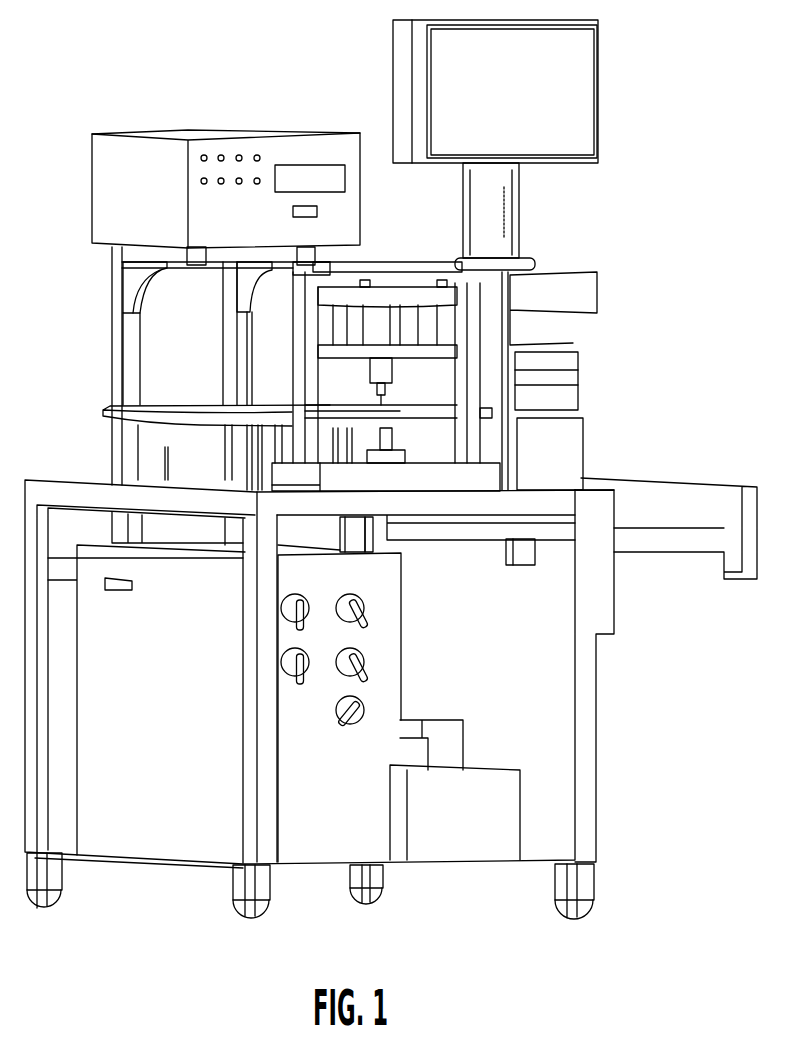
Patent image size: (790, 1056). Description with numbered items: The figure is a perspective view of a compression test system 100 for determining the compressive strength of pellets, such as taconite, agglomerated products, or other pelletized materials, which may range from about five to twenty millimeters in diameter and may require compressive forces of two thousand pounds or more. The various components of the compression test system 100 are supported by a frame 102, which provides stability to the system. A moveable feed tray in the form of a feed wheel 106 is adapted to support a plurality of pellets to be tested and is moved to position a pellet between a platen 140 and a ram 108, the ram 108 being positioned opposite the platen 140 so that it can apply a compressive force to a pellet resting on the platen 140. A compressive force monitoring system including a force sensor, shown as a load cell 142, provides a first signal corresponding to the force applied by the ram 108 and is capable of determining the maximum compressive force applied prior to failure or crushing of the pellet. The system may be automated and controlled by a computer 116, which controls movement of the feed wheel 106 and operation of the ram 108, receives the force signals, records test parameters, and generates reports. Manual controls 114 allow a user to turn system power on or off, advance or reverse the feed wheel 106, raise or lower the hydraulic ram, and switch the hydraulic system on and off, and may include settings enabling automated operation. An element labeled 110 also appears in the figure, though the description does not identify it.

The compression test system 100 is at (391, 484).
The frame 102 is at (347, 714).
The feed wheel 106 is at (167, 403).
The ram 108 is at (383, 396).
The press head assembly 110 is at (405, 327).
The manual controls 114 is at (335, 822).
The computer 116 is at (601, 82).
The platen 140 is at (393, 438).
The load cell 142 is at (388, 458).